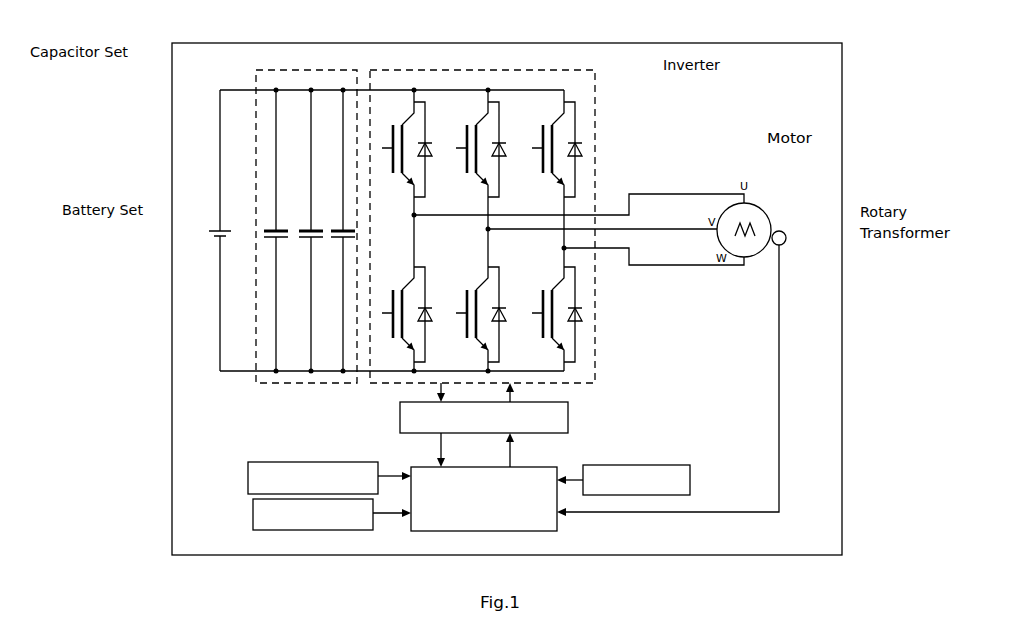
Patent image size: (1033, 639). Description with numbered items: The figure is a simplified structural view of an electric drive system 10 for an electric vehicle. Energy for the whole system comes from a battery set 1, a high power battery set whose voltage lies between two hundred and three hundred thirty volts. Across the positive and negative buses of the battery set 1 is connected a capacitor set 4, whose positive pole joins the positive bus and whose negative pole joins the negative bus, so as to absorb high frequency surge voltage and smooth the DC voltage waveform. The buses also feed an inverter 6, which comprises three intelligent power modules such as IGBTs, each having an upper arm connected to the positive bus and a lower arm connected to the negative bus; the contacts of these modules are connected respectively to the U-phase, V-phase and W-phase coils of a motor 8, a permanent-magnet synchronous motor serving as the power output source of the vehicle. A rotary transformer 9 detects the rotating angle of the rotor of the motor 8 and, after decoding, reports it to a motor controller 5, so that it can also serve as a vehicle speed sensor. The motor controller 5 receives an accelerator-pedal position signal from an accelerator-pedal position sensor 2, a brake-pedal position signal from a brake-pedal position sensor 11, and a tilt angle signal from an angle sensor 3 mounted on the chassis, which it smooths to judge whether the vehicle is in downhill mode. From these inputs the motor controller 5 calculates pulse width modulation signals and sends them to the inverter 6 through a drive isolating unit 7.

The battery set 1 is at (207, 224).
The accelerator-pedal position sensor 2 is at (315, 462).
The angle sensor 3 is at (313, 530).
The capacitor set 4 is at (250, 77).
The motor controller 5 is at (512, 467).
The inverter 6 is at (595, 85).
The drive isolating unit 7 is at (568, 416).
The motor 8 is at (762, 202).
The rotary transformer 9 is at (787, 233).
The electric drive system 10 is at (483, 38).
The brake-pedal position sensor 11 is at (650, 465).